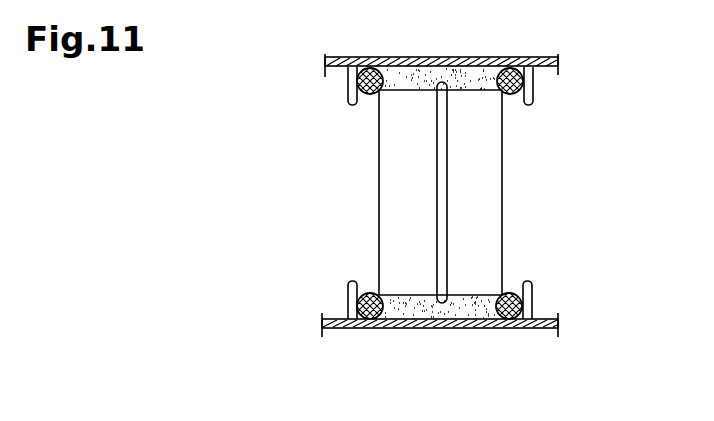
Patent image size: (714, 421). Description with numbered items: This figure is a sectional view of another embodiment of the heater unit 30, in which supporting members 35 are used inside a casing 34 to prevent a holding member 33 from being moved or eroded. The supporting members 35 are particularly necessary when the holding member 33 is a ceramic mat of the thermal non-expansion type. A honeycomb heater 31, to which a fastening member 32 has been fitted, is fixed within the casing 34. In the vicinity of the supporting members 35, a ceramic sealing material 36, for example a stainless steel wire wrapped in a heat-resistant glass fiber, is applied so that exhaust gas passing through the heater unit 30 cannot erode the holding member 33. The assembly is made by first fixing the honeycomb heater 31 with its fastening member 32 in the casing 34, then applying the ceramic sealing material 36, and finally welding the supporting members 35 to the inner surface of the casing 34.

The heater unit 30 is at (513, 47).
The honeycomb heater 31 is at (485, 252).
The fastening member 32 is at (443, 197).
The holding member 33 is at (470, 90).
The casing 34 is at (441, 57).
The supporting member 35 is at (524, 90).
The ceramic sealing material 36 is at (348, 90).